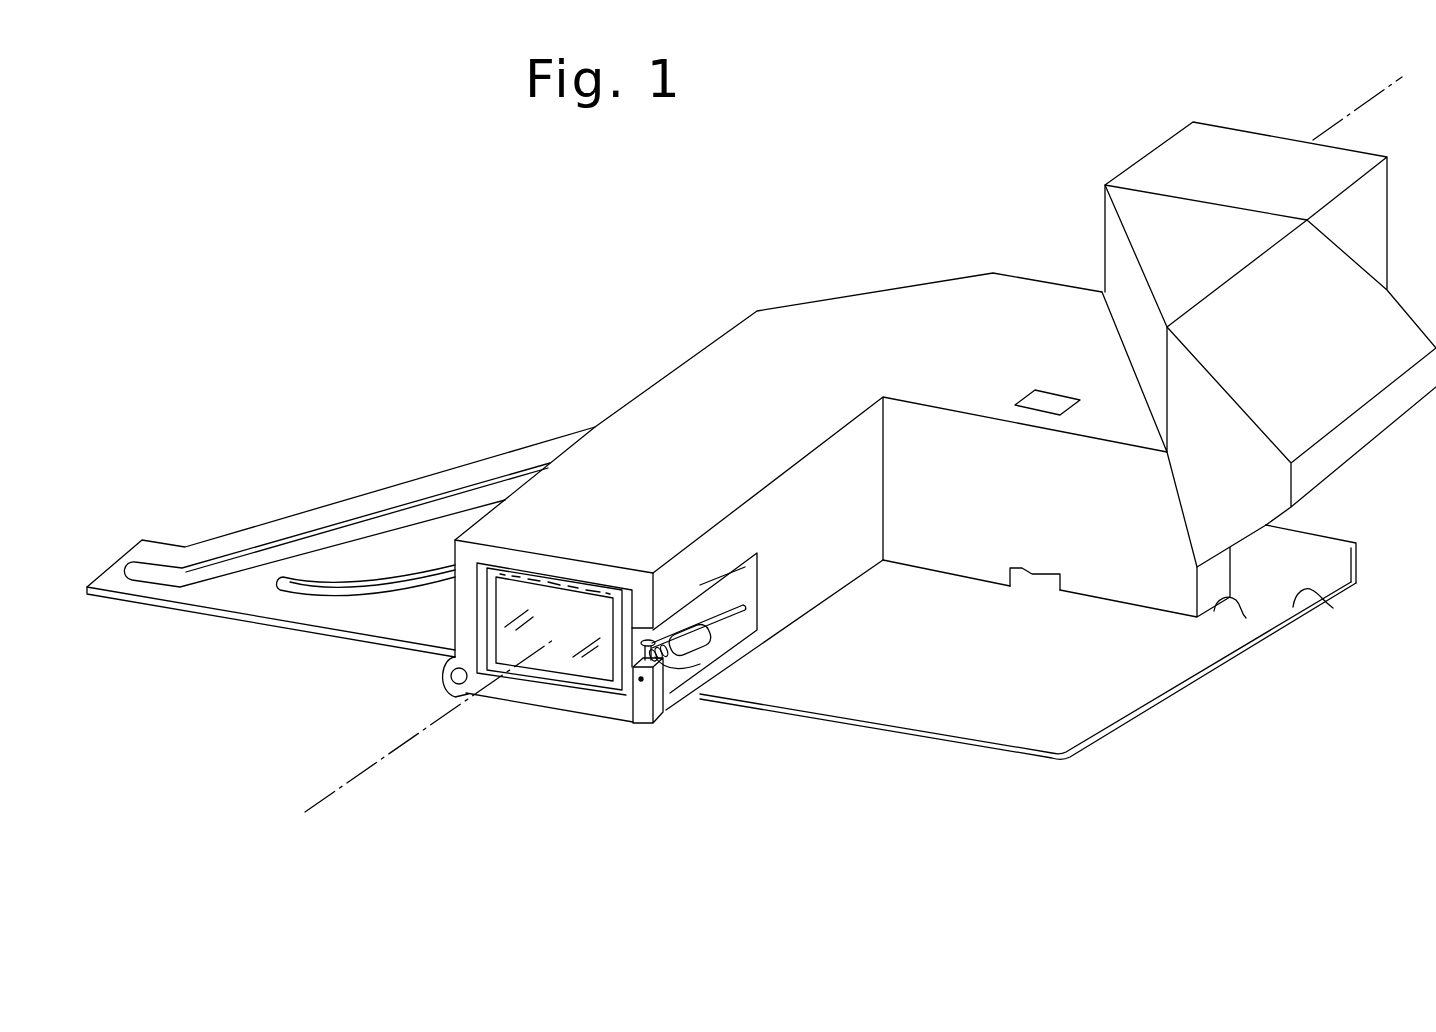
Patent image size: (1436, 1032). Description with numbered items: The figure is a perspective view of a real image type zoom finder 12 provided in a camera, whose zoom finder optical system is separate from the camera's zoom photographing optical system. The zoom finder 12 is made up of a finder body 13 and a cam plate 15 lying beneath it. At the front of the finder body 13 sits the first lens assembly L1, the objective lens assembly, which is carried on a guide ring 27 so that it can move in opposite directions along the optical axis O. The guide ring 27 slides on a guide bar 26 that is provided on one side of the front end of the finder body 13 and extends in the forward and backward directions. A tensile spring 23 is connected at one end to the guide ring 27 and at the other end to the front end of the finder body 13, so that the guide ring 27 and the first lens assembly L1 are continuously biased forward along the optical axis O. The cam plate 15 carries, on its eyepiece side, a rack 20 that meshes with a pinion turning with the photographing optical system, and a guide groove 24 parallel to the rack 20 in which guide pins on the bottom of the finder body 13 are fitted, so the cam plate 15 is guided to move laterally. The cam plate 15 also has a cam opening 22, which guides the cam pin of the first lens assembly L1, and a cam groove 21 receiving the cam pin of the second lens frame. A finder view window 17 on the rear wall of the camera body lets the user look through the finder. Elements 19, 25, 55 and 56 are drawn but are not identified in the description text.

The real image type zoom finder 12 is at (1009, 158).
The finder body 13 is at (946, 272).
The cam plate 15 is at (1122, 693).
The finder view window 17 is at (1296, 133).
The window 19 is at (571, 683).
The rack 20 is at (1288, 602).
The cam groove 21 is at (333, 537).
The cam opening 22 is at (363, 595).
The tensile spring 23 is at (667, 630).
The guide groove 24 is at (1240, 617).
The bracket plate 25 is at (718, 603).
The guide bar 26 is at (717, 623).
The guide ring 27 is at (688, 657).
The hole 55 is at (1052, 386).
The notch 56 is at (1033, 593).
The first lens assembly L1 is at (553, 640).
The optical axis O is at (412, 748).